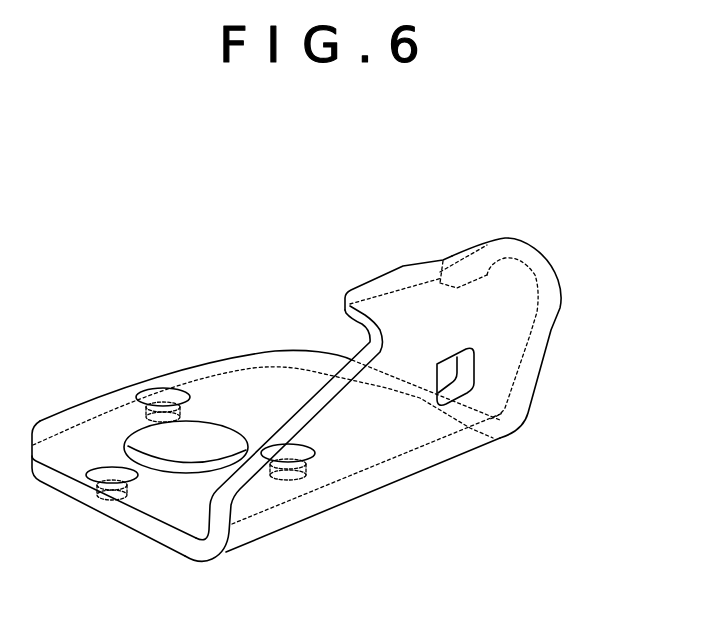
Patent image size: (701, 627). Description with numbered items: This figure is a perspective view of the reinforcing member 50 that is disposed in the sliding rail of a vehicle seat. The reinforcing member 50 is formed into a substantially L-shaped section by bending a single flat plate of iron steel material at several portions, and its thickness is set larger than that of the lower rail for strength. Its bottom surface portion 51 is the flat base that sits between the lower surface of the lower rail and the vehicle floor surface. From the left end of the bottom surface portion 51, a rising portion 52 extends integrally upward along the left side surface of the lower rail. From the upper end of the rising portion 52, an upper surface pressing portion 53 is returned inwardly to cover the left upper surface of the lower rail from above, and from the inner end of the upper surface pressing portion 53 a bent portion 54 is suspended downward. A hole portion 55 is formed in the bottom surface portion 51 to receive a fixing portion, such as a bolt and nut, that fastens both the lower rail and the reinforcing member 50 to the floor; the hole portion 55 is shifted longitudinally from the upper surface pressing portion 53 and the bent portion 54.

The reinforcing member 50 is at (528, 241).
The bottom surface portion 51 is at (167, 500).
The rising portion 52 is at (320, 402).
The upper surface pressing portion 53 is at (388, 283).
The bent portion 54 is at (487, 275).
The hole portion 55 is at (198, 420).